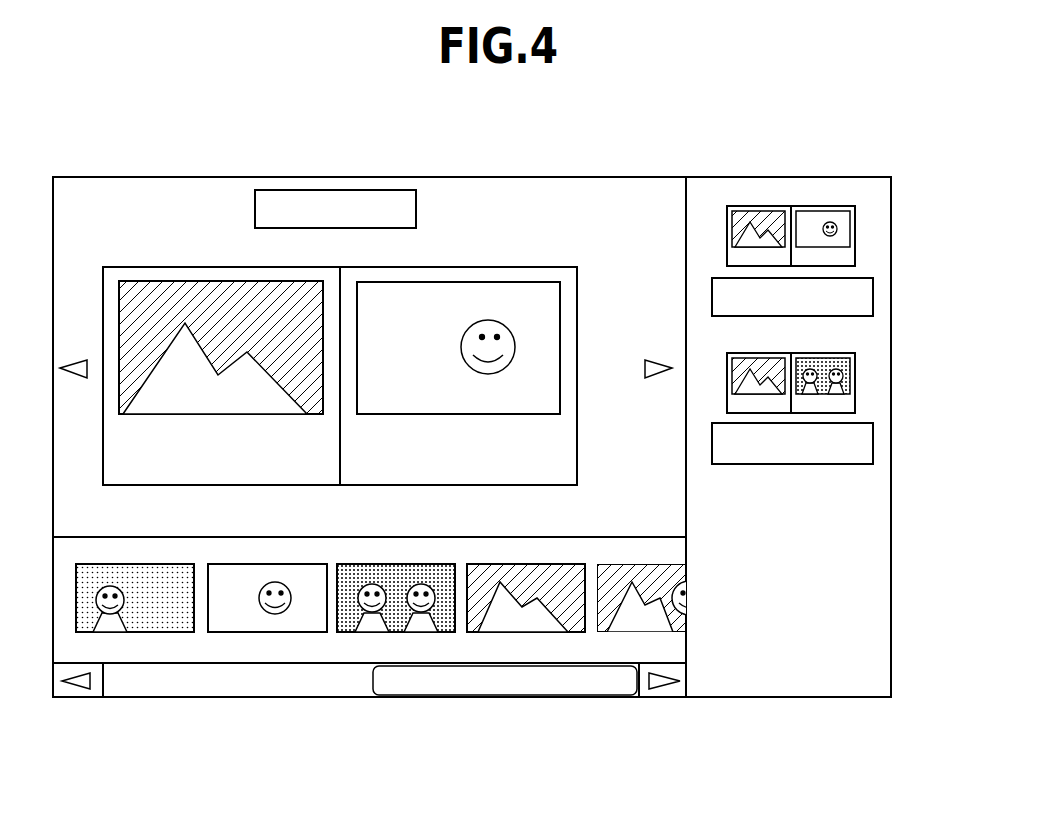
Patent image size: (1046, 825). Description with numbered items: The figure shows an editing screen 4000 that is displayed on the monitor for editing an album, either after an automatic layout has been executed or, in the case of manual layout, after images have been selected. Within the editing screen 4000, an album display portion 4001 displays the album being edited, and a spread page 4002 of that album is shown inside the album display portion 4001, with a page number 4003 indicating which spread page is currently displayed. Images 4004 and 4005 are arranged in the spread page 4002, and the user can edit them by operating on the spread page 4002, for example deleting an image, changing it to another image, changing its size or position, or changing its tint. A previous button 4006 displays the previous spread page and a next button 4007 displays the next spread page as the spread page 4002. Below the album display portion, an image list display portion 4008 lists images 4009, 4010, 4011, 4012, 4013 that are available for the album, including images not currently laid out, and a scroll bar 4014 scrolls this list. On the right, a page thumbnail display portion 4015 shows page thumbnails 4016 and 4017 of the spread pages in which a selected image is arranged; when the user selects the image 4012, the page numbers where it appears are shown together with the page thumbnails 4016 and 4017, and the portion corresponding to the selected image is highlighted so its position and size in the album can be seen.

The editing screen 4000 is at (487, 176).
The album display portion 4001 is at (87, 191).
The spread page 4002 is at (564, 267).
The page number 4003 is at (337, 190).
The image 4004 is at (199, 280).
The image 4005 is at (467, 281).
The previous button 4006 is at (73, 358).
The next button 4007 is at (657, 359).
The image list display portion 4008 is at (202, 653).
The image 4009 is at (138, 563).
The image 4010 is at (272, 563).
The image 4011 is at (398, 563).
The image 4012 is at (533, 563).
The image 4013 is at (638, 563).
The scroll bar 4014 is at (75, 698).
The page thumbnail display portion 4015 is at (805, 673).
The page thumbnail 4016 is at (857, 252).
The page thumbnail 4017 is at (857, 402).